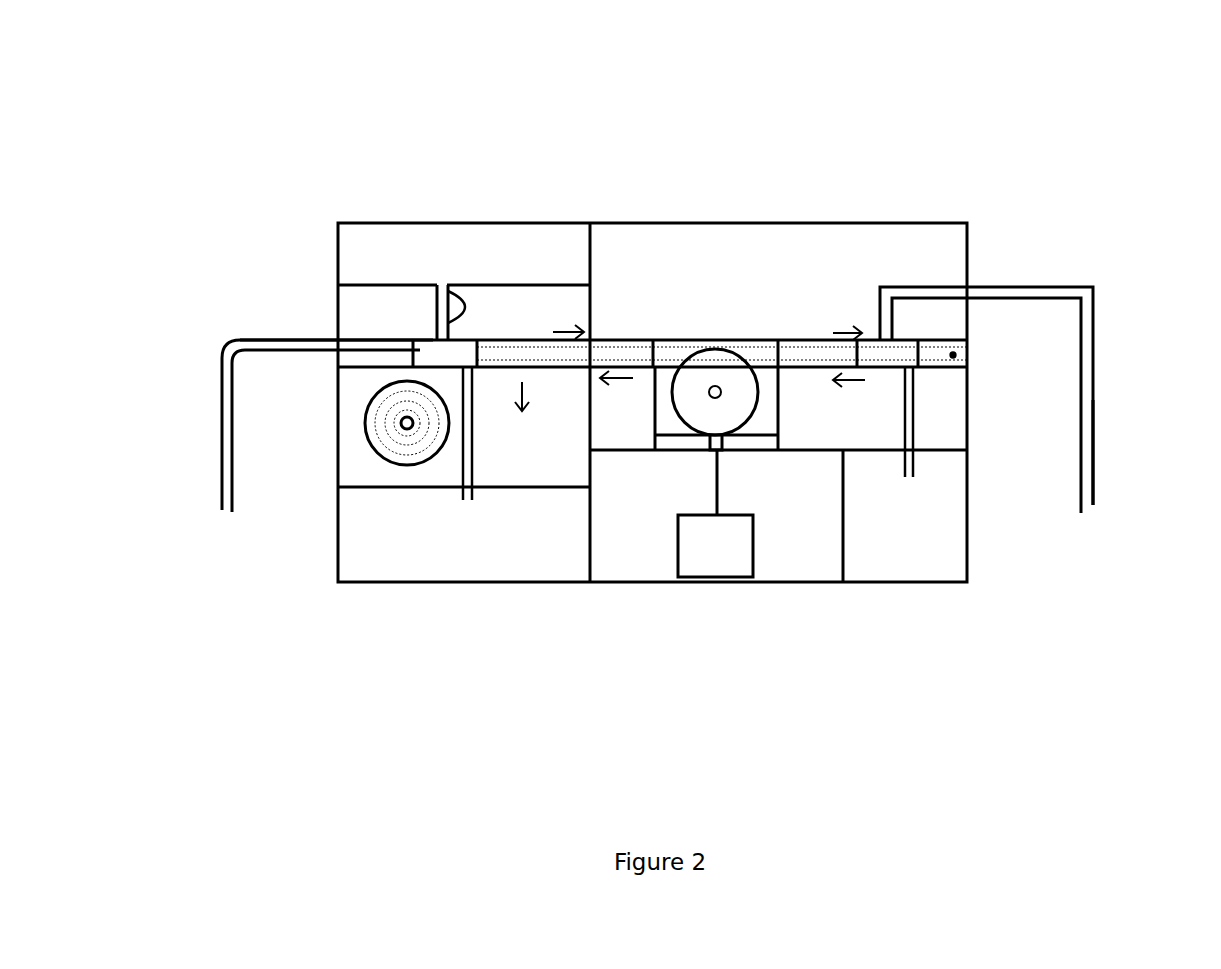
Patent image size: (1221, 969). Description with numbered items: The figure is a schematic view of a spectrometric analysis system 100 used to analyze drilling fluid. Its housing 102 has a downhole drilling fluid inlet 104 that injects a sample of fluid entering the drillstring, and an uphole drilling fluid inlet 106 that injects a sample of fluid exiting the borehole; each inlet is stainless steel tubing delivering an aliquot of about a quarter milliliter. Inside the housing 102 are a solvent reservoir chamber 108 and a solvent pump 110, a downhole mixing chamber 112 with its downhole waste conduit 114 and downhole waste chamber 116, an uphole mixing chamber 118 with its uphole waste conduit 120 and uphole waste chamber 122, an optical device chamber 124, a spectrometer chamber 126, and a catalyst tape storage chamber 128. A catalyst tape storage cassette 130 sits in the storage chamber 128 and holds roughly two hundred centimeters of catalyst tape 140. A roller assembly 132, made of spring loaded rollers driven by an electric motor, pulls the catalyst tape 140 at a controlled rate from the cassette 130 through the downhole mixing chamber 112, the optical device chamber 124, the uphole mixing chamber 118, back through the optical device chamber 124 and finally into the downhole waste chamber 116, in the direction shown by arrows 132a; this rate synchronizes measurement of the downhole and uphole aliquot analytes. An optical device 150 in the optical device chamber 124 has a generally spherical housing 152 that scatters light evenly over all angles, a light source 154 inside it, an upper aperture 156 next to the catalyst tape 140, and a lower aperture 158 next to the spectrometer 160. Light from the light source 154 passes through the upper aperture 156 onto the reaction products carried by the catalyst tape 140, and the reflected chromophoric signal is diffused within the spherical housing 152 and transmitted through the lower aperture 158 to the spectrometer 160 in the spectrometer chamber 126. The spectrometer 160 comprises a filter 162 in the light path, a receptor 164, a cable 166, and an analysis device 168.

The spectrometric analysis system 100 is at (1077, 165).
The housing 102 is at (898, 222).
The downhole drilling fluid inlet 104 is at (222, 445).
The uphole drilling fluid inlet 106 is at (1097, 407).
The solvent reservoir chamber 108 is at (372, 240).
The solvent pump 110 is at (433, 313).
The downhole mixing chamber 112 is at (460, 358).
The downhole waste conduit 114 is at (465, 465).
The downhole waste chamber 116 is at (413, 548).
The uphole mixing chamber 118 is at (938, 340).
The uphole waste conduit 120 is at (907, 413).
The uphole waste chamber 122 is at (928, 560).
The optical device chamber 124 is at (763, 387).
The spectrometer chamber 126 is at (757, 540).
The catalyst tape storage chamber 128 is at (348, 395).
The catalyst tape storage cassette 130 is at (390, 455).
The roller assembly 132 is at (958, 355).
The arrows 132a is at (582, 332).
The catalyst tape 140 is at (590, 437).
The optical device 150 is at (747, 440).
The spherical housing 152 is at (723, 420).
The light source 154 is at (717, 392).
The upper aperture 156 is at (720, 350).
The lower aperture 158 is at (708, 436).
The spectrometer 160 is at (678, 548).
The filter 162 is at (723, 447).
The receptor 164 is at (712, 448).
The cable 166 is at (715, 507).
The analysis device 168 is at (715, 546).